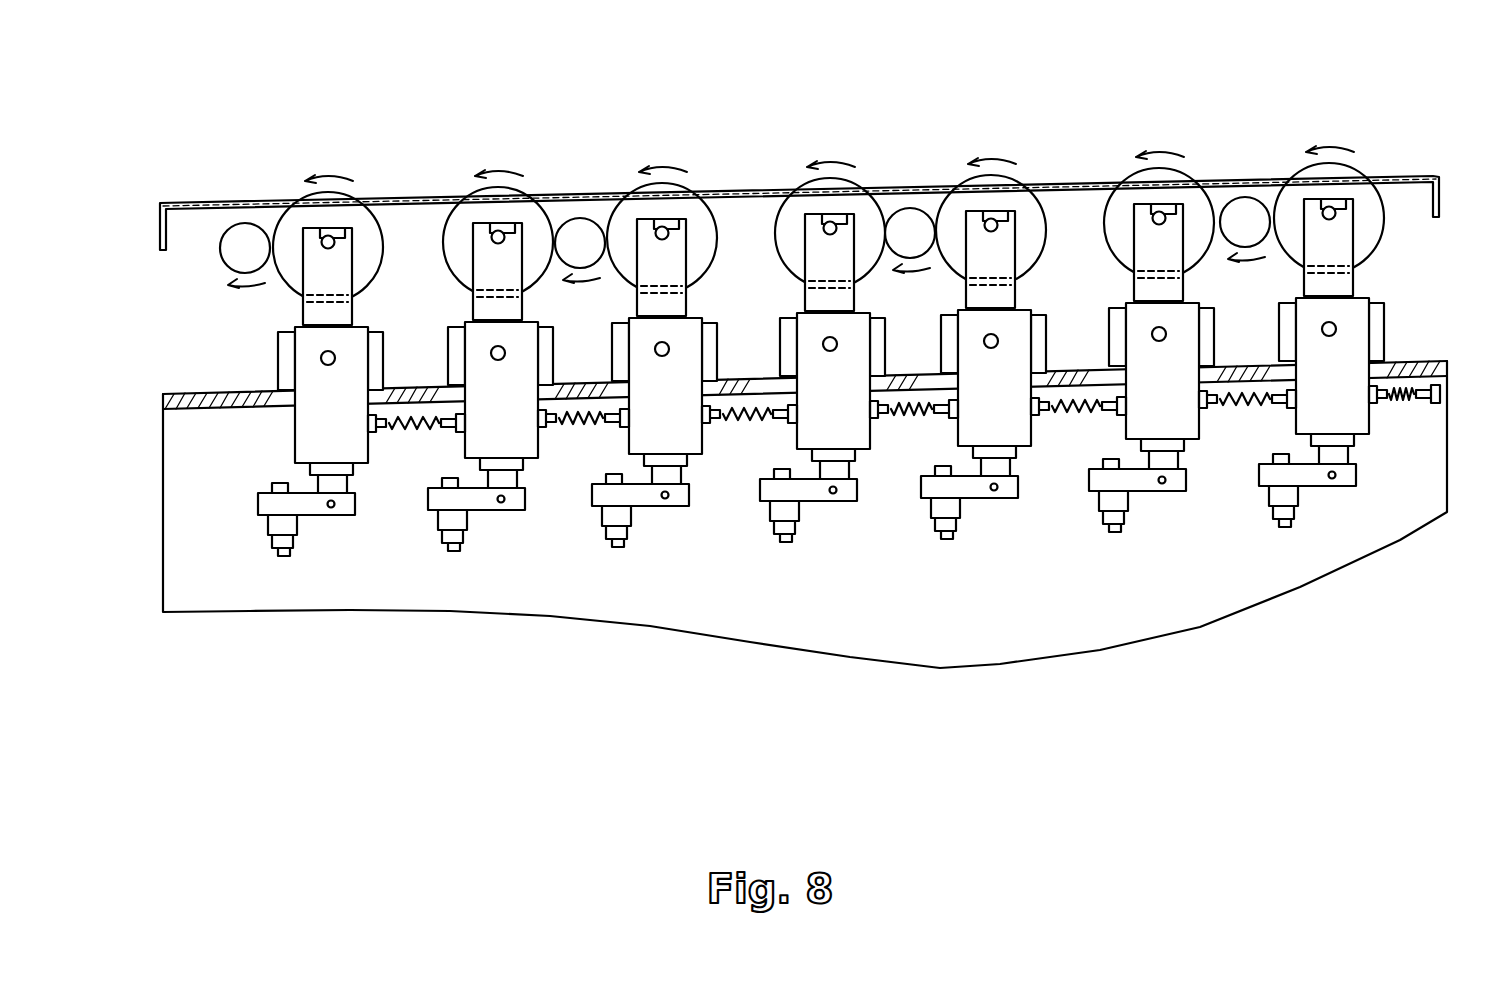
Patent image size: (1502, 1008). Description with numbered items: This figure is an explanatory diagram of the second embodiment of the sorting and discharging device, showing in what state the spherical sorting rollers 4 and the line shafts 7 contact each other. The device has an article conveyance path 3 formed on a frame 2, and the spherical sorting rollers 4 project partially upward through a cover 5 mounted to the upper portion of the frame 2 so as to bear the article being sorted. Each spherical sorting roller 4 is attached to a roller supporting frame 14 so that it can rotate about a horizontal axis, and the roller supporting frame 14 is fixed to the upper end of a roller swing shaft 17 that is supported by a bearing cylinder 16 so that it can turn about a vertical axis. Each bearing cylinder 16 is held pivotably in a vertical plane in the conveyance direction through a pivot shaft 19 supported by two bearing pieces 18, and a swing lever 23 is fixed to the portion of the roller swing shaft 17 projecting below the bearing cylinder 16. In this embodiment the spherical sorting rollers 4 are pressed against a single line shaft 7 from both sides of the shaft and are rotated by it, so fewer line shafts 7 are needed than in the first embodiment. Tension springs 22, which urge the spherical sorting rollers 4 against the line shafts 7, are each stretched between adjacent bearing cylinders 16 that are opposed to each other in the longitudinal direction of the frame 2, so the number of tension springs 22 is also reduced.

The frame 2 is at (1442, 461).
The article conveyance path 3 is at (1183, 131).
The spherical sorting roller 4 is at (798, 183).
The cover 5 is at (1391, 170).
The line shaft 7 is at (906, 208).
The roller supporting frame 14 is at (312, 290).
The bearing cylinder 16 is at (308, 426).
The roller swing shaft 17 is at (330, 486).
The bearing piece 18 is at (278, 365).
The pivot shaft 19 is at (338, 352).
The tension spring 22 is at (410, 432).
The swing lever 23 is at (317, 512).